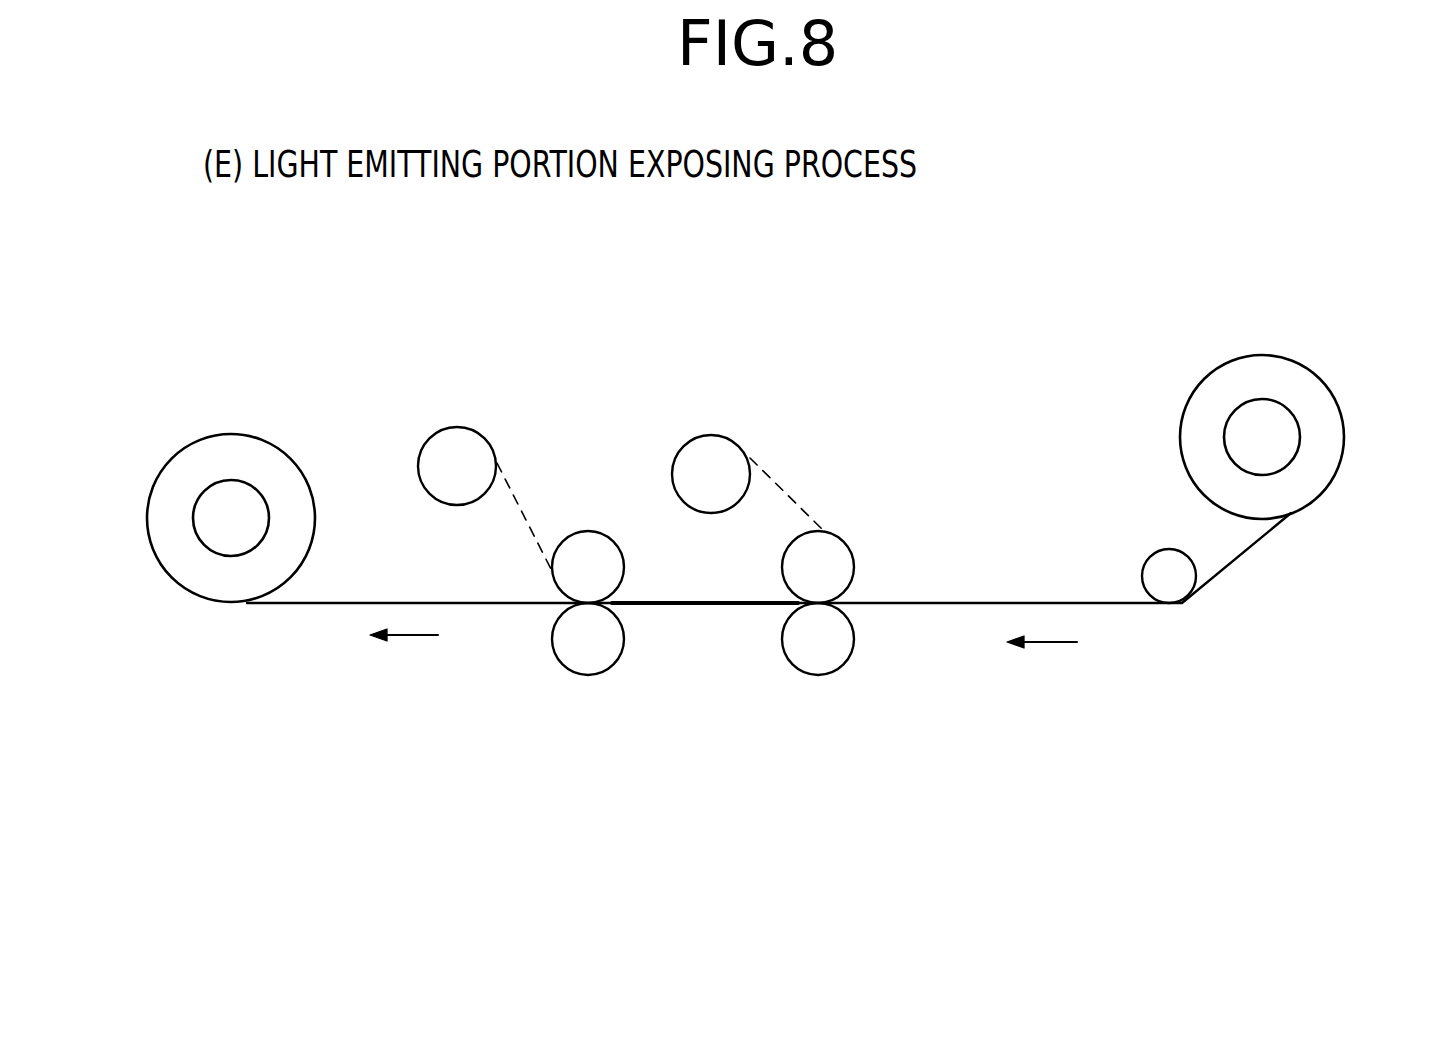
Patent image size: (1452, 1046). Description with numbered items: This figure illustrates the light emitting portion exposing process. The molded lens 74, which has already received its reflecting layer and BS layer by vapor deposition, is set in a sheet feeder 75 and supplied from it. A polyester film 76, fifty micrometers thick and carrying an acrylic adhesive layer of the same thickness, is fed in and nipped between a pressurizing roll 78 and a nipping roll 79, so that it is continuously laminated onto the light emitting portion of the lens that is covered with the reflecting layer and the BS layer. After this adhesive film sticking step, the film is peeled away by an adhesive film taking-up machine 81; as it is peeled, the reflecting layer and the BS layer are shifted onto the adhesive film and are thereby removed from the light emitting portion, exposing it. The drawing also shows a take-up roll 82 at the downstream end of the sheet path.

The molded lens 74 is at (1263, 378).
The sheet feeder 75 is at (1263, 435).
The polyester film 76 is at (780, 482).
The pressurizing roll 78 is at (817, 570).
The nipping roll 79 is at (817, 643).
The adhesive film taking-up machine 81 is at (457, 460).
The take-up roll 82 is at (232, 513).